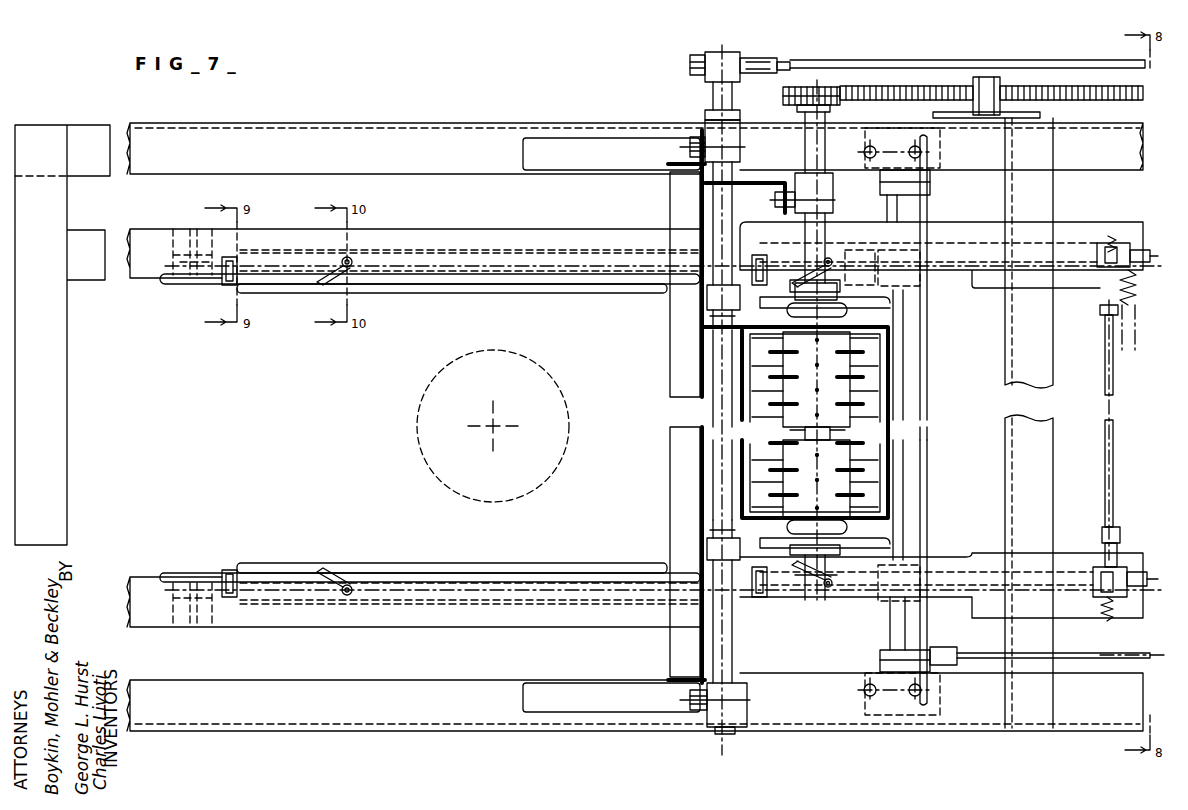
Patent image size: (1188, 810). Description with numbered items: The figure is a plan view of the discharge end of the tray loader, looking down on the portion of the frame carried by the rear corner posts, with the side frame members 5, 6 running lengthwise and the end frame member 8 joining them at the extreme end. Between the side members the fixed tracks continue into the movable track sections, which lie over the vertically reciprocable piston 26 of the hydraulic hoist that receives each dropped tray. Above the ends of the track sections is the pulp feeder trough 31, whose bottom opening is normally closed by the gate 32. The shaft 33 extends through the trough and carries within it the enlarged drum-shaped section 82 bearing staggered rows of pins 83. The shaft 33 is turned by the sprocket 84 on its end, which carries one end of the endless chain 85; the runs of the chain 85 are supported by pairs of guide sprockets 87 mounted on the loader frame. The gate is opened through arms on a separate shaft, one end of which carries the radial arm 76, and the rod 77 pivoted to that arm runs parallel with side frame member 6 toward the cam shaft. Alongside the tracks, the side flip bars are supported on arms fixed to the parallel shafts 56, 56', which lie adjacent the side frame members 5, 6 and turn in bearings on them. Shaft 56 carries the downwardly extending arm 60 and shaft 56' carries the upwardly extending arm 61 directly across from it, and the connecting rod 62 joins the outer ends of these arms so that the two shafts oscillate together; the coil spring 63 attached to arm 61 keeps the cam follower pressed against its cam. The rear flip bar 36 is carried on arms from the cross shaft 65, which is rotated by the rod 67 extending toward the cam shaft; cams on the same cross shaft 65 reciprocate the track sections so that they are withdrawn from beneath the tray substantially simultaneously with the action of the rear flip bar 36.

The side frame member 5 is at (392, 736).
The side frame member 6 is at (459, 130).
The end frame member 8 is at (1048, 431).
The piston 26 is at (430, 452).
The trough 31 is at (850, 338).
The gate 32 is at (832, 422).
The shaft 33 is at (805, 147).
The rear flip bar 36 is at (927, 445).
The shaft 56 is at (1090, 564).
The shaft 56' is at (1135, 245).
The arm 60 is at (1110, 598).
The arm 61 is at (1109, 240).
The connecting rod 62 is at (1113, 457).
The coil spring 63 is at (1136, 292).
The cross shaft 65 is at (903, 478).
The rod 67 is at (1078, 654).
The arm 76 is at (736, 60).
The rod 77 is at (908, 60).
The drum-shaped section 82 is at (845, 397).
The pins 83 is at (700, 382).
The sprocket 84 is at (790, 102).
The endless chain 85 is at (1063, 89).
The guide sprockets 87 is at (990, 85).